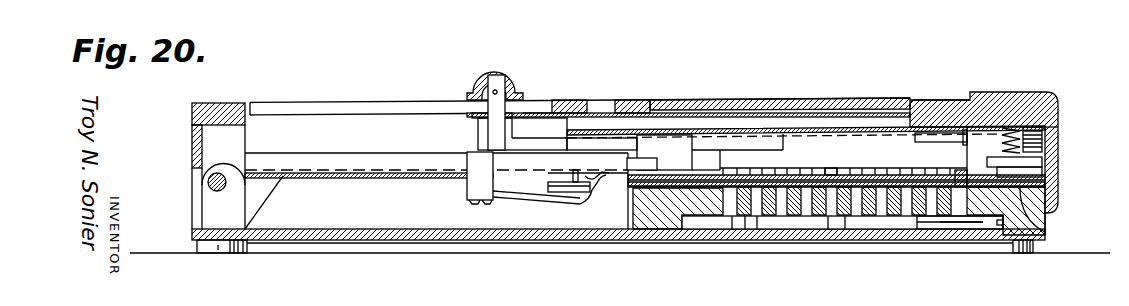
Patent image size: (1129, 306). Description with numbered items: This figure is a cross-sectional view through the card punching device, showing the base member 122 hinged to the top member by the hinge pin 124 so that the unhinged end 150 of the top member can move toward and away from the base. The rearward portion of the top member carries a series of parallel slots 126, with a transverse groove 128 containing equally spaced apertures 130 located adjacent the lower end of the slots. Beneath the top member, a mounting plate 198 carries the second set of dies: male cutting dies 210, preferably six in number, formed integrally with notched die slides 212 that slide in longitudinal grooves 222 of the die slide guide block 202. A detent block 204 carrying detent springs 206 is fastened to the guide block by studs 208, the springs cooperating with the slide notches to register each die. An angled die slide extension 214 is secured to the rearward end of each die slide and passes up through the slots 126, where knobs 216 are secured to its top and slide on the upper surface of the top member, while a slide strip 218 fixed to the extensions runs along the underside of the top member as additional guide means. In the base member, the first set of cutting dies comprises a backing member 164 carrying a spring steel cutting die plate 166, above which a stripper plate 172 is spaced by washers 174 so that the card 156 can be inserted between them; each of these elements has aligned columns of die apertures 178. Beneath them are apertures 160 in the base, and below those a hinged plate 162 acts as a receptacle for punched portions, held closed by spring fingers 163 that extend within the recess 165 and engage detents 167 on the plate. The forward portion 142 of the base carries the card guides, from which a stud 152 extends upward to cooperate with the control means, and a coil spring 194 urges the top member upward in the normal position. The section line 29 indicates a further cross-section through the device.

The section line 29- 29 is at (893, 95).
The base member 122 is at (508, 244).
The hinge pin 124 is at (208, 182).
The parallel slots 126 is at (260, 103).
The transverse groove 128 is at (586, 103).
The apertures 130 is at (620, 103).
The forward portion of base member 142 is at (1042, 237).
The unhinged end of top member 150 is at (1057, 104).
The stud 152 is at (1044, 143).
The card 156 is at (886, 174).
The apertures 160 is at (744, 218).
The hinged plate 162 is at (815, 241).
The spring fingers 163 is at (977, 230).
The backing member 164 is at (1050, 197).
The recess 165 is at (692, 230).
The spring steel cutting die plate 166 is at (1049, 211).
The detents 167 is at (938, 228).
The stripper plate 172 is at (764, 170).
The washers 174 is at (658, 168).
The die apertures 178 is at (829, 172).
The coil spring 194 is at (1054, 123).
The mounting plate 198 is at (921, 98).
The die slide guide block 202 is at (600, 169).
The detent block 204 is at (466, 188).
The detent springs 206 is at (558, 203).
The studs 208 is at (494, 201).
The male cutting dies 210 is at (961, 173).
The die slides 212 is at (516, 143).
The angled die slide extension 214 is at (487, 134).
The knobs 216 is at (514, 88).
The slide strip 218 is at (742, 103).
The grooves 222 is at (347, 178).